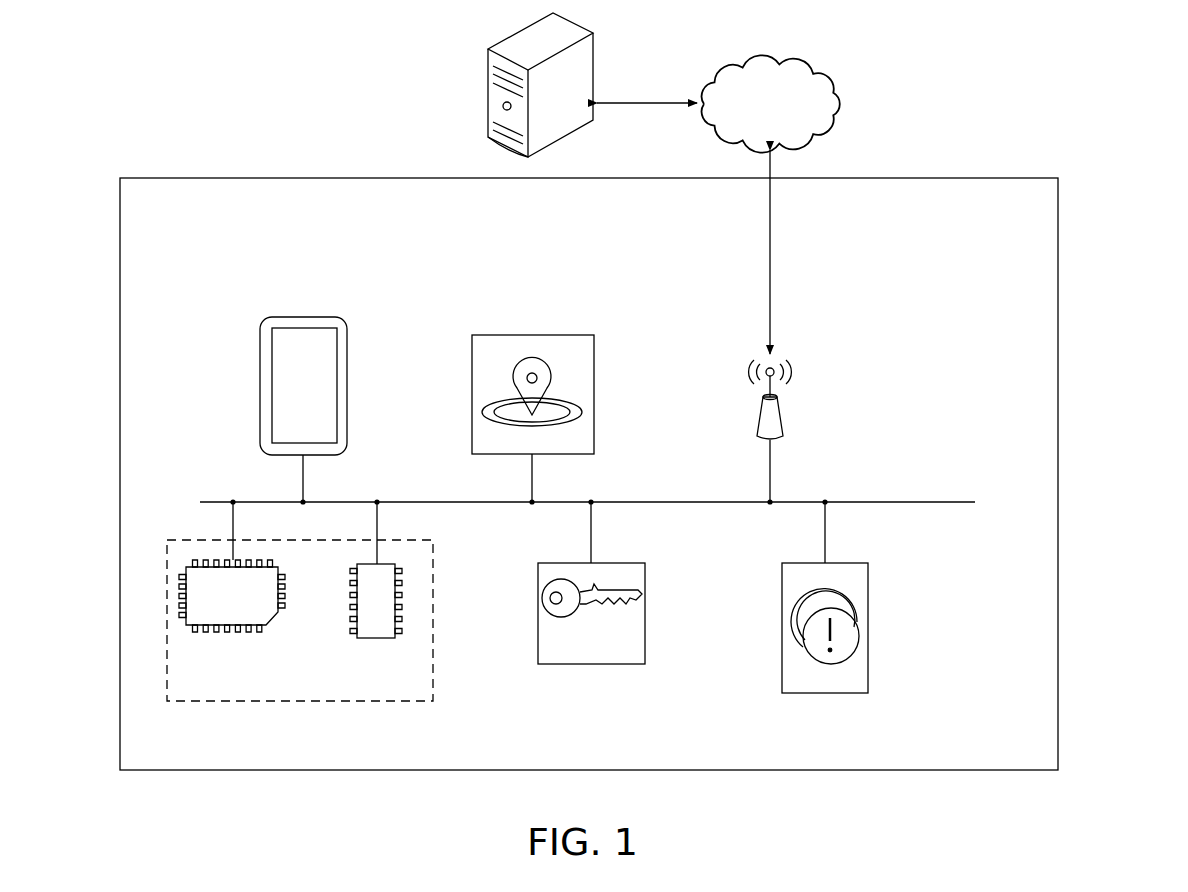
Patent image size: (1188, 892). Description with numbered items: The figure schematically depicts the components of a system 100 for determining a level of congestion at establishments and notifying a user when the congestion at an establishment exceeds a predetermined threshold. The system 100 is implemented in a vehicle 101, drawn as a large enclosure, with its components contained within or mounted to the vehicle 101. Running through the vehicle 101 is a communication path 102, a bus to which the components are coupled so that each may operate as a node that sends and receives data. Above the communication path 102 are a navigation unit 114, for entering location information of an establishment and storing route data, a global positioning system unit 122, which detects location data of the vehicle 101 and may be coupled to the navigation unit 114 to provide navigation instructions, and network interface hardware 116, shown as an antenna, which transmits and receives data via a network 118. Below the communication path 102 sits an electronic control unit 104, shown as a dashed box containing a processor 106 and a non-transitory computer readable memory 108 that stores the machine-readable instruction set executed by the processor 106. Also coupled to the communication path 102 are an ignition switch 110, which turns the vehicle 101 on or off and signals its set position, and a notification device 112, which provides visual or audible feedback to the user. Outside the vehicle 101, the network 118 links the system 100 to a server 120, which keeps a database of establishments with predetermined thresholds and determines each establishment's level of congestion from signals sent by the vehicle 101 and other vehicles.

The system 100 is at (1092, 139).
The vehicle 101 is at (1058, 298).
The communication path 102 is at (212, 500).
The electronic control unit 104 is at (433, 688).
The processor 106 is at (272, 626).
The non-transitory computer readable memory 108 is at (377, 639).
The ignition switch 110 is at (590, 665).
The notification device 112 is at (868, 626).
The navigation unit 114 is at (303, 317).
The network interface hardware 116 is at (762, 406).
The network 118 is at (845, 96).
The server 120 is at (488, 92).
The global positioning system (GPS) unit 122 is at (532, 335).